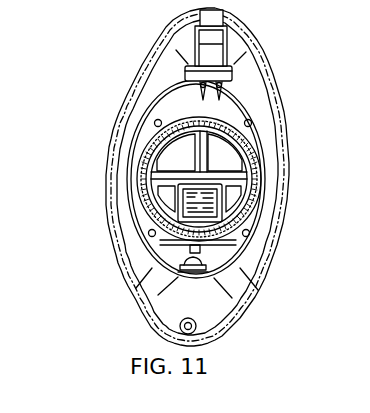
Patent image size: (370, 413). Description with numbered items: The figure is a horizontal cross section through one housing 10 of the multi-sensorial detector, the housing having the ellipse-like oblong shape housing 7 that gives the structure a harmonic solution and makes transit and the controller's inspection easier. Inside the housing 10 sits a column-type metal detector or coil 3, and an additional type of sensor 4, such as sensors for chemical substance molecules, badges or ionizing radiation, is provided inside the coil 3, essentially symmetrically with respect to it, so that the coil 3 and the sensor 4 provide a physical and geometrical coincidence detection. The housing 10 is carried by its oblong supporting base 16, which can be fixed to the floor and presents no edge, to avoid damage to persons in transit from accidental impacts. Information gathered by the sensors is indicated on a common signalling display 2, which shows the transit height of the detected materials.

The housing 10 is at (110, 53).
The oblong shape housing 7 is at (228, 279).
The metal detector or coil 3 is at (262, 163).
The additional type of sensor 4 is at (190, 195).
The signalling display 2 is at (222, 252).
The supporting base 16 is at (154, 320).